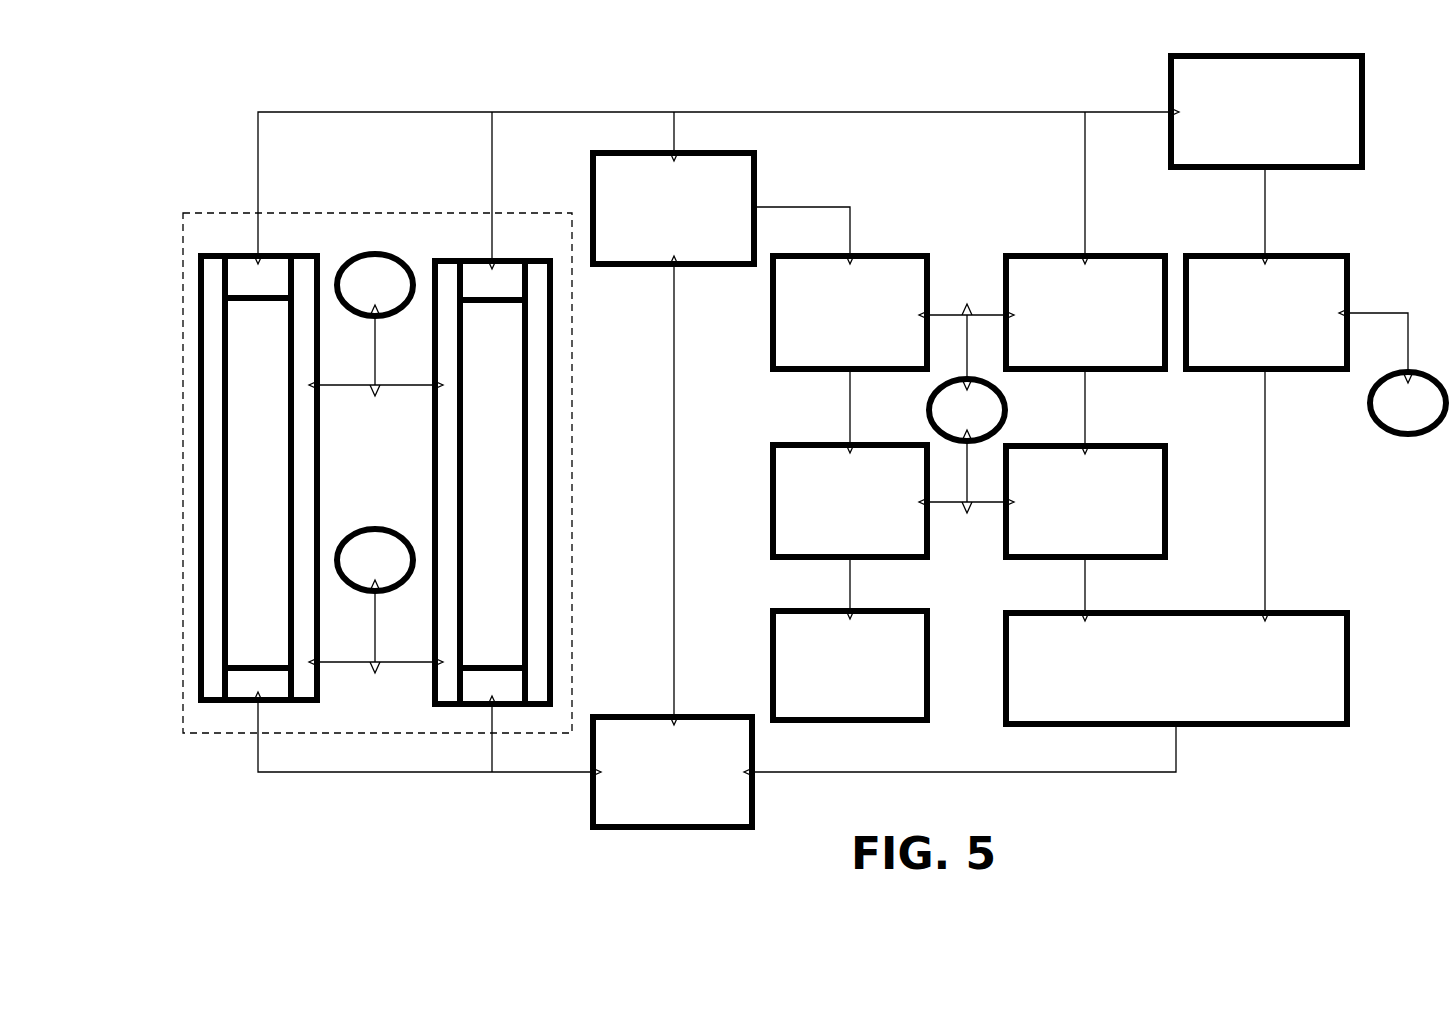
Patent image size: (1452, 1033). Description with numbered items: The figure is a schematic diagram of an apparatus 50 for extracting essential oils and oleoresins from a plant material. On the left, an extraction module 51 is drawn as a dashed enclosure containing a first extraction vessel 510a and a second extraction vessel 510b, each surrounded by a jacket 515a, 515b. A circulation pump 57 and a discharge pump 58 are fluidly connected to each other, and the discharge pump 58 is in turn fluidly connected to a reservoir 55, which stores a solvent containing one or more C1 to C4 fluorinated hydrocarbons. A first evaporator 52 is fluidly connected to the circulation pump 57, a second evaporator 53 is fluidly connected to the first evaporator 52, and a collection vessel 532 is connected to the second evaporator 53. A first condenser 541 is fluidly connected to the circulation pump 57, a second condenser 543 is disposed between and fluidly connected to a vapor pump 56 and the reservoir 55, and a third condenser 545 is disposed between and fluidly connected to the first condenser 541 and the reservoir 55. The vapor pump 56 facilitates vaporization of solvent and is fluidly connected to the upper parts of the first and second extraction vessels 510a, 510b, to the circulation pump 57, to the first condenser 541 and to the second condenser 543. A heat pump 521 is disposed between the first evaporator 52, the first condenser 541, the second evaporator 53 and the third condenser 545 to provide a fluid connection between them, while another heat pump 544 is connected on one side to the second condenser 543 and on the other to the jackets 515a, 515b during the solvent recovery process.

The apparatus 50 is at (173, 100).
The extraction module 51 is at (235, 213).
The first extraction vessel 510a is at (198, 492).
The second extraction vessel 510b is at (555, 485).
The jacket 515a is at (212, 610).
The jacket 515b is at (540, 633).
The first evaporator 52 is at (815, 300).
The heat pump 521 is at (998, 425).
The second evaporator 53 is at (810, 505).
The collection vessel 532 is at (895, 658).
The first condenser 541 is at (1100, 295).
The second condenser 543 is at (1300, 253).
The heat pump 544 is at (1376, 425).
The third condenser 545 is at (1135, 522).
The reservoir 55 is at (1185, 692).
The vapor pump 56 is at (1335, 133).
The circulation pump 57 is at (710, 200).
The discharge pump 58 is at (645, 800).